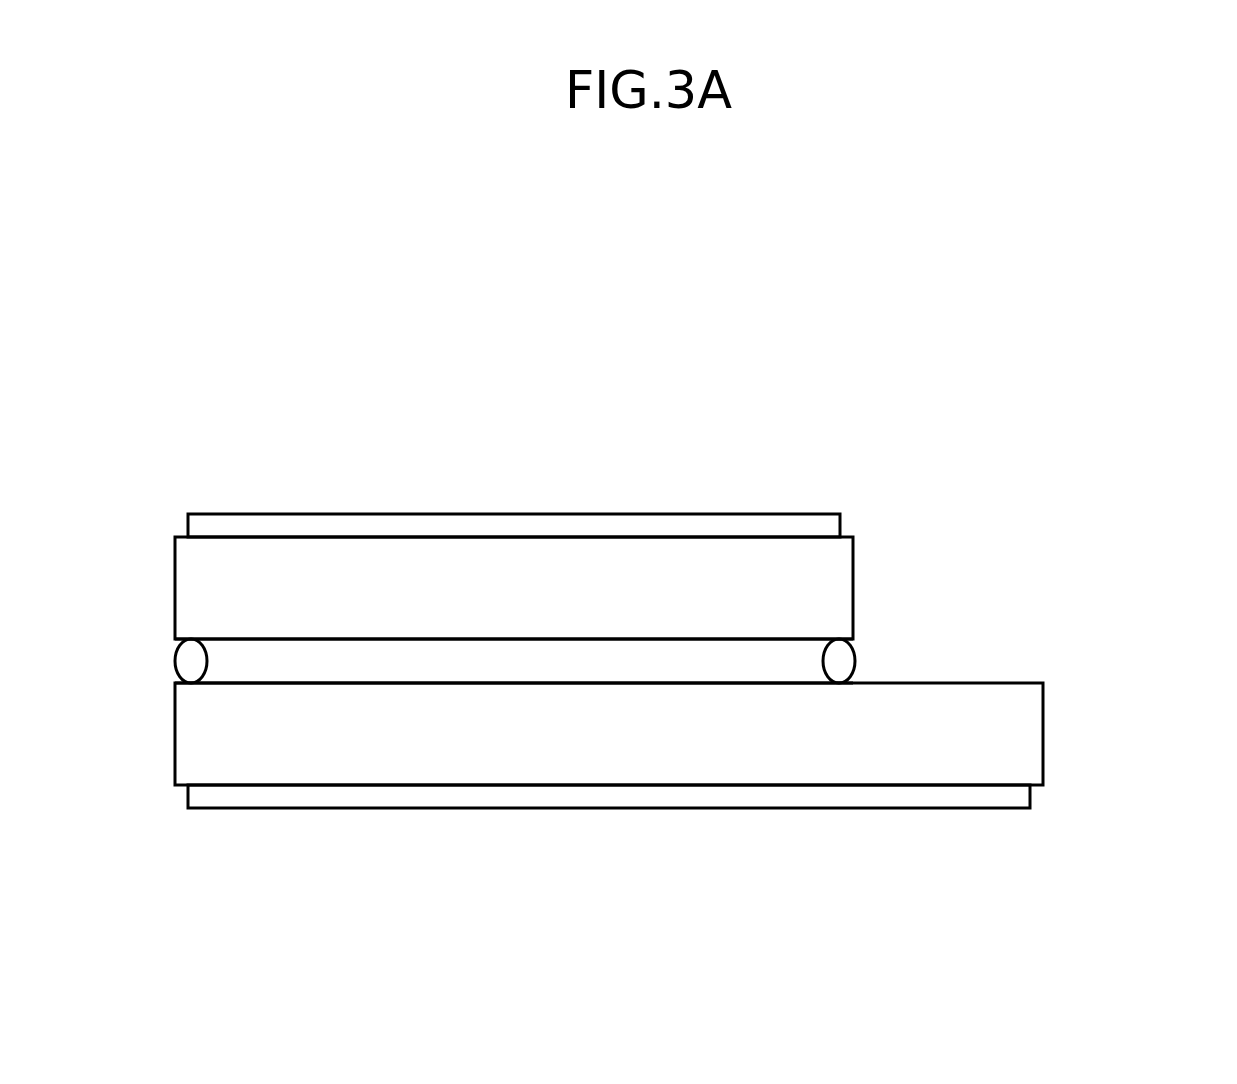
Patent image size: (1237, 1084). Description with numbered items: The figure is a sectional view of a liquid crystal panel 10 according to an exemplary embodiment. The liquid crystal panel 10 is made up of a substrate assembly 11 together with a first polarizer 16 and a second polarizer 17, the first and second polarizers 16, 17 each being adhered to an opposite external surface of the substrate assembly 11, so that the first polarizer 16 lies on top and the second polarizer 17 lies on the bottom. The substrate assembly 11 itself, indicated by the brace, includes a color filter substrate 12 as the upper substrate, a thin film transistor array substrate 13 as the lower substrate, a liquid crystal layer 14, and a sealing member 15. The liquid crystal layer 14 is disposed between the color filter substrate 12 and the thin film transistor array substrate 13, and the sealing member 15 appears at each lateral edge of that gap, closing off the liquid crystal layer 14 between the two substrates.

The liquid crystal panel 10 is at (958, 403).
The substrate assembly 11 is at (1163, 522).
The color filter substrate 12 is at (827, 558).
The thin film transistor array substrate 13 is at (1017, 737).
The liquid crystal layer 14 is at (777, 655).
The sealing member 15 is at (847, 663).
The first polarizer 16 is at (488, 515).
The second polarizer 17 is at (620, 808).